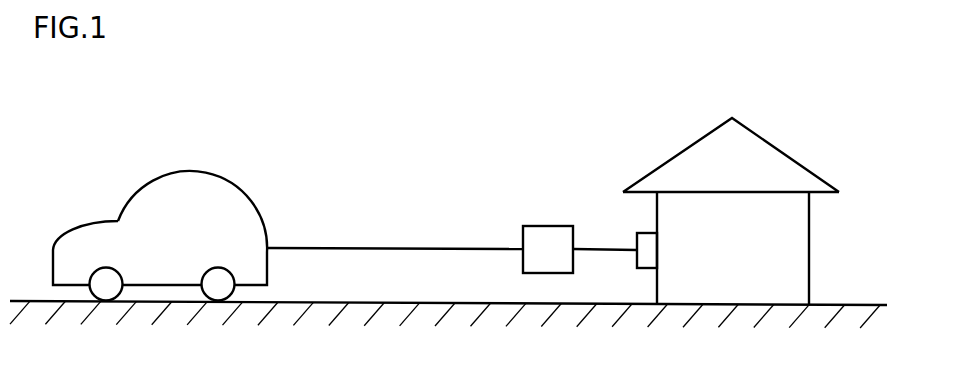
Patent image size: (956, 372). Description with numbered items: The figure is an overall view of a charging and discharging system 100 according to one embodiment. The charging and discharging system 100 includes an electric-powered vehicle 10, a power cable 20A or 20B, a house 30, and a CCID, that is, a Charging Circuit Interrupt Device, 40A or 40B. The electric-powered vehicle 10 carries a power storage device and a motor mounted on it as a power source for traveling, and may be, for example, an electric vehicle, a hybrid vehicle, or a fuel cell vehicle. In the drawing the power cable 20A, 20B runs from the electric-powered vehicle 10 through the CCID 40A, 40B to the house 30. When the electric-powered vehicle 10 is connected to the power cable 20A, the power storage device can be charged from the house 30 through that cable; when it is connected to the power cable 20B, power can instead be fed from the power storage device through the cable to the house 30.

The charging and discharging system 100 is at (136, 77).
The electric-powered vehicle 10 is at (188, 175).
The power cable 20A is at (403, 248).
The power cable 20B is at (452, 249).
The house 30 is at (772, 145).
The CCID (Charging Circuit Interrupt Device) 40A is at (548, 226).
The CCID (Charging Circuit Interrupt Device) 40B is at (590, 249).